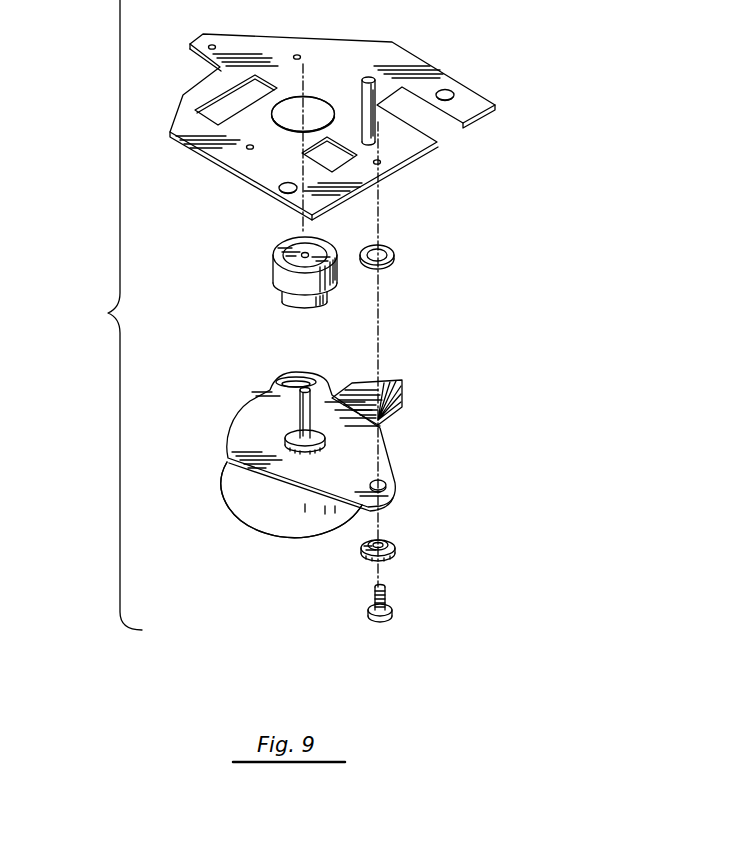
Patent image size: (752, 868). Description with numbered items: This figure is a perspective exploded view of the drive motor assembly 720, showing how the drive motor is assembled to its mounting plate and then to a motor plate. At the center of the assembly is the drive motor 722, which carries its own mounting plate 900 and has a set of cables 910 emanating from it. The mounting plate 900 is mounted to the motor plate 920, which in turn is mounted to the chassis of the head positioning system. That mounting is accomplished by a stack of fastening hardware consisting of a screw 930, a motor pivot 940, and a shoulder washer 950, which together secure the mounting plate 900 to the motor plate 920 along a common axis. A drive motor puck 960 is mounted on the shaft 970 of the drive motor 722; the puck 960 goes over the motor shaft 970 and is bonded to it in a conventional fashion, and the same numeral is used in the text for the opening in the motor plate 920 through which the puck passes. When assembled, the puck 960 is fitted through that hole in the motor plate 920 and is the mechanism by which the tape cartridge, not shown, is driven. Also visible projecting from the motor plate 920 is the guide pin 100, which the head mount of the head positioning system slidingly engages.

The drive motor assembly 720 is at (106, 313).
The motor plate 920 is at (387, 58).
The guide pin 100 is at (360, 103).
The motor shaft 970 is at (283, 128).
The drive motor puck 960 is at (273, 262).
The shoulder washer 950 is at (394, 258).
The mounting plate 900 is at (267, 387).
The set of cables 910 is at (397, 375).
The drive motor 722 is at (248, 493).
The motor pivot 940 is at (395, 548).
The screw 930 is at (387, 597).